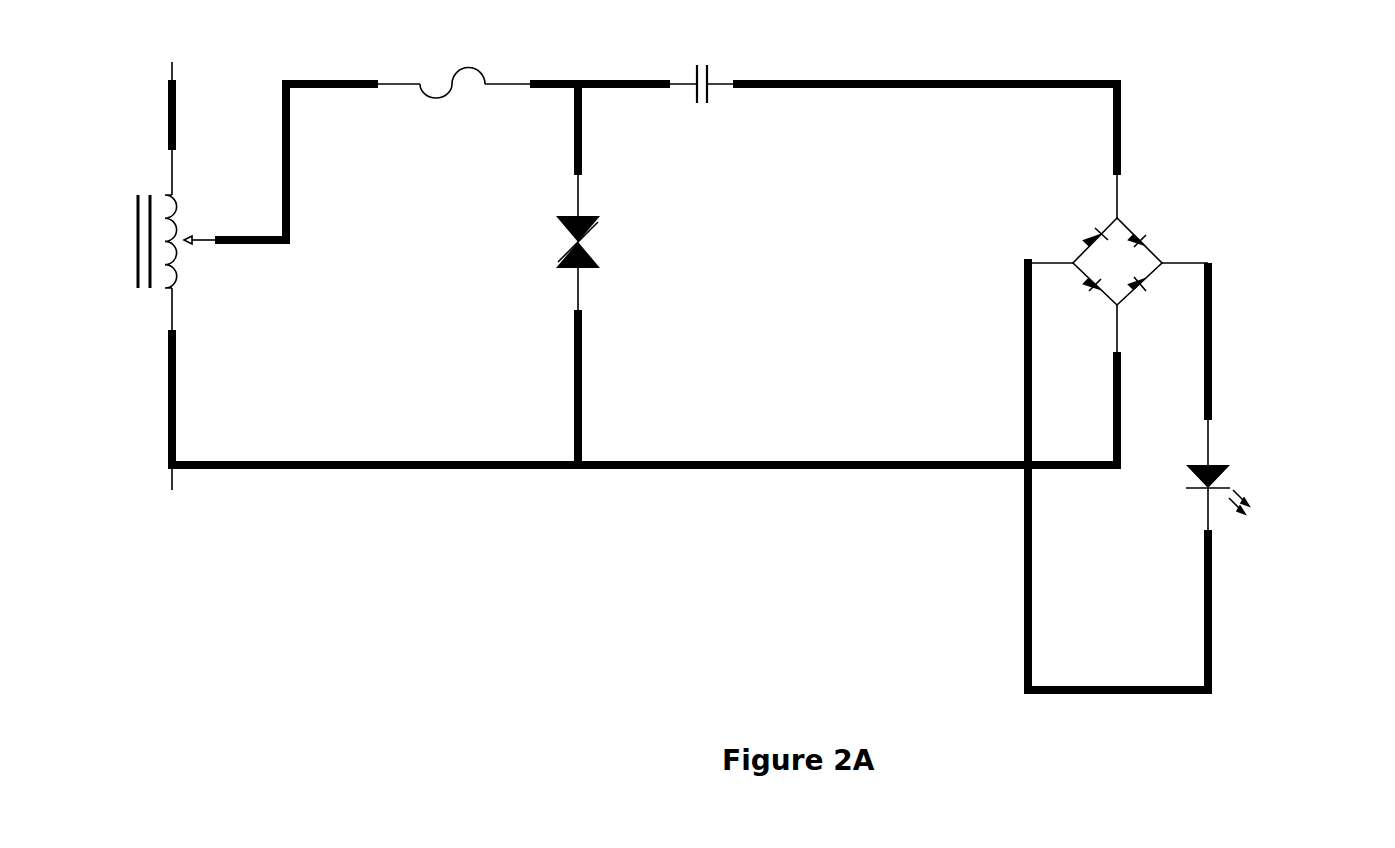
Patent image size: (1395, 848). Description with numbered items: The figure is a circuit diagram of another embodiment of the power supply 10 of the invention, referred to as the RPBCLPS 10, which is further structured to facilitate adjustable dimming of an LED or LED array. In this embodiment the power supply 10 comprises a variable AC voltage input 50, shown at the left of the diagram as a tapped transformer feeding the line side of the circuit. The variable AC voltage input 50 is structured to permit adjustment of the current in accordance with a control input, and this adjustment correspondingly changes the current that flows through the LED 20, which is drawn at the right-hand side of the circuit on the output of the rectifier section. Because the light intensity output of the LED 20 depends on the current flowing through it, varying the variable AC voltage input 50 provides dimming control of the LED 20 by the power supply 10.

The power supply 10 is at (1192, 65).
The LED 20 is at (1220, 458).
The variable AC voltage input 50 is at (130, 255).